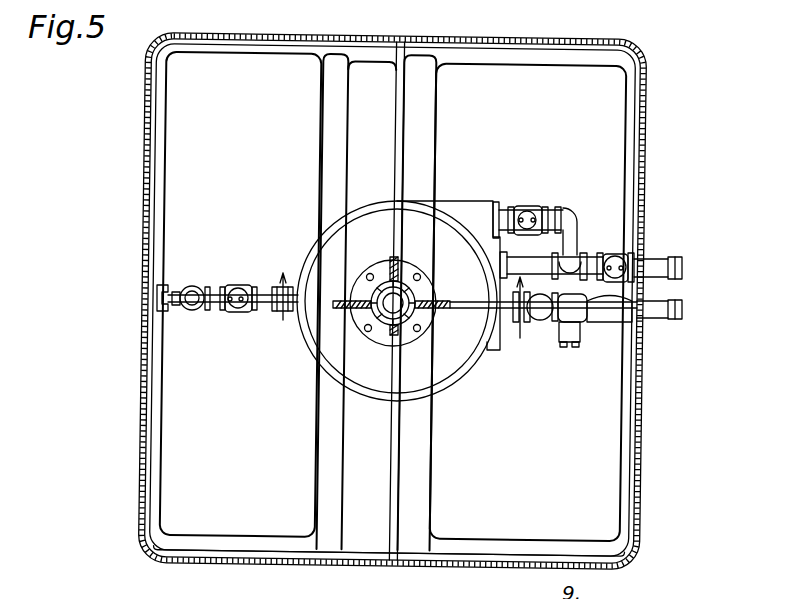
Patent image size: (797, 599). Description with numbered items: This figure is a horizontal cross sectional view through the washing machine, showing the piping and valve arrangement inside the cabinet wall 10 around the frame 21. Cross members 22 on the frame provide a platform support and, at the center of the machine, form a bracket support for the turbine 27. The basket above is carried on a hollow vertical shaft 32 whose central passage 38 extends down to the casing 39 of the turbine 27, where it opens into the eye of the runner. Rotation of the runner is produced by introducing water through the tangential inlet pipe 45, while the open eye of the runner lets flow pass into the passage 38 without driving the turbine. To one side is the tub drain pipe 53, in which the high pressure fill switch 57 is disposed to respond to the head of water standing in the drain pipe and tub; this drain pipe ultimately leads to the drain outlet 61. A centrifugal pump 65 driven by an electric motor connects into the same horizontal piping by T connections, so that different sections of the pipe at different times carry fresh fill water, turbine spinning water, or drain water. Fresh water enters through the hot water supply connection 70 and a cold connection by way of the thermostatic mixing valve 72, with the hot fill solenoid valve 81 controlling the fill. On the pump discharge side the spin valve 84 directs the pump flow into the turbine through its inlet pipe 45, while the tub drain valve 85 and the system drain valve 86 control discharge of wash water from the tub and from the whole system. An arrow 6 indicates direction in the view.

The cabinet wall 10 is at (643, 433).
The frame 21 is at (143, 466).
The cross members 22 is at (388, 467).
The turbine 27 is at (306, 364).
The hollow vertical shaft 32 is at (405, 327).
The central passage 38 is at (388, 307).
The casing 39 is at (340, 253).
The tangential inlet pipe 45 is at (497, 202).
The tub drain pipe 53 is at (192, 286).
The pressure switch 57 is at (157, 300).
The direction arrow 6 is at (398, 317).
The drain outlet 61 is at (682, 265).
The centrifugal pump 65 is at (490, 352).
The hot water supply pipe connection 70 is at (683, 308).
The thermostatic mixing valve 72 is at (620, 318).
The hot fill solenoid valve 81 is at (570, 347).
The spin solenoid valve 84 is at (528, 212).
The tub drain solenoid valve 85 is at (236, 312).
The system drain solenoid valve 86 is at (615, 255).